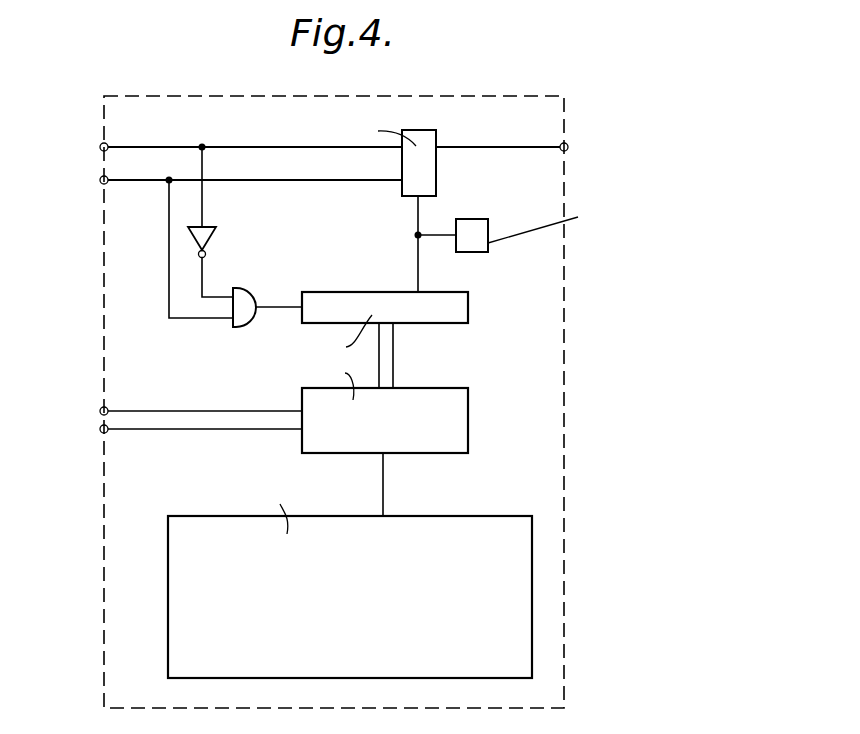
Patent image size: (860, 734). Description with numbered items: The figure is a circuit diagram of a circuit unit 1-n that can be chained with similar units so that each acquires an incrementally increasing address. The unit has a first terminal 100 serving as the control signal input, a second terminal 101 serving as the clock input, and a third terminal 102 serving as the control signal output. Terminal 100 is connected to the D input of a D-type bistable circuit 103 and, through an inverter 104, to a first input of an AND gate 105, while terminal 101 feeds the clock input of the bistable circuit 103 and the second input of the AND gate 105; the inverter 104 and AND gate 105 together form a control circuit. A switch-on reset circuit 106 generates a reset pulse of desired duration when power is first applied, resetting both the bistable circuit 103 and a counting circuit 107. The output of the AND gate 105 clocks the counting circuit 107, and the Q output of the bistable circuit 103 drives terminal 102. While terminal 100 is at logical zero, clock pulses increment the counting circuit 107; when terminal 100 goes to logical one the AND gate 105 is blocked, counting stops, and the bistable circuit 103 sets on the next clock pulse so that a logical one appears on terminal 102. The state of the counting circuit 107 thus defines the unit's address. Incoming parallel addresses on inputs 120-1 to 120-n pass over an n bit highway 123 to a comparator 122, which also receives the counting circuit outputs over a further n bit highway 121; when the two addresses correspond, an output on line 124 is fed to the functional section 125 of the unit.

The circuit unit 1-n is at (171, 96).
The first terminal 100 is at (100, 149).
The second terminal 101 is at (100, 183).
The third terminal 102 is at (568, 143).
The D-type bistable circuit 103 is at (421, 138).
The inverter 104 is at (210, 240).
The AND gate 105 is at (243, 302).
The switch-on reset circuit 106 is at (469, 236).
The counting circuit 107 is at (465, 308).
The n bit highway 121 is at (391, 352).
The comparator 122 is at (452, 416).
The n bit highway 123 is at (194, 420).
The input 120-1 is at (100, 408).
The input 120-n is at (100, 432).
The line 124 is at (385, 478).
The functional section 125 is at (360, 534).